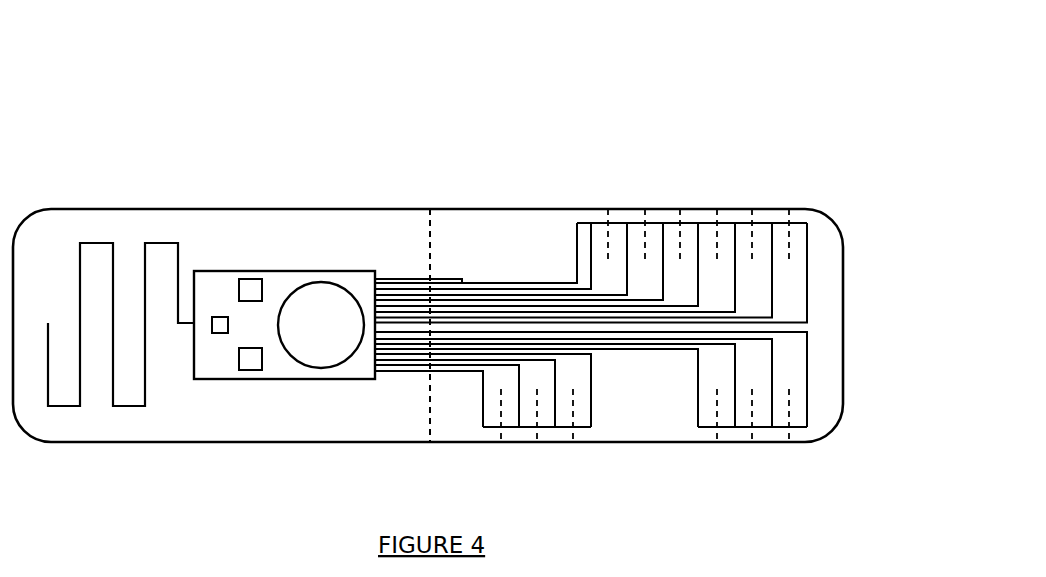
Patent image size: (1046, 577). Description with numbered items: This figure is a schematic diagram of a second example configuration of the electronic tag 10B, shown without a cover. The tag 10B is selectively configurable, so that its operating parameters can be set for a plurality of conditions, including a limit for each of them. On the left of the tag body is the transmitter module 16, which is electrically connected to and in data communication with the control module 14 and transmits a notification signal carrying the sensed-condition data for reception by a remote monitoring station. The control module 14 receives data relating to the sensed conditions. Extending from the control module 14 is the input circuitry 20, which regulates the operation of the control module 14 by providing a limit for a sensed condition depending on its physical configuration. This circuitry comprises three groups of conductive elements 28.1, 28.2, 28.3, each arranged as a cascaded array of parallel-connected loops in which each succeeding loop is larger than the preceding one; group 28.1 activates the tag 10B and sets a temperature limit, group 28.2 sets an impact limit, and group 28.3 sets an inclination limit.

The electronic tag 10B is at (645, 104).
The control module 14 is at (215, 270).
The transmitter module 16 is at (97, 243).
The input circuitry 20 is at (403, 265).
The group of conductive elements 28.1 is at (818, 270).
The group of conductive elements 28.2 is at (603, 410).
The group of conductive elements 28.3 is at (820, 380).